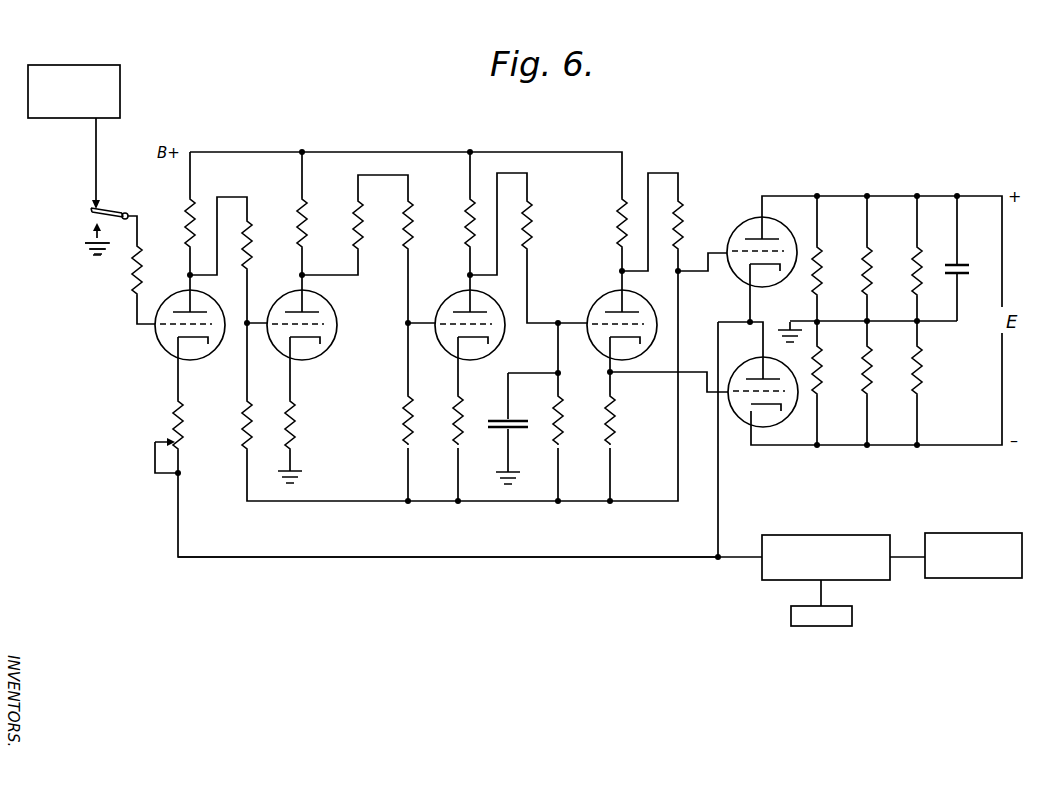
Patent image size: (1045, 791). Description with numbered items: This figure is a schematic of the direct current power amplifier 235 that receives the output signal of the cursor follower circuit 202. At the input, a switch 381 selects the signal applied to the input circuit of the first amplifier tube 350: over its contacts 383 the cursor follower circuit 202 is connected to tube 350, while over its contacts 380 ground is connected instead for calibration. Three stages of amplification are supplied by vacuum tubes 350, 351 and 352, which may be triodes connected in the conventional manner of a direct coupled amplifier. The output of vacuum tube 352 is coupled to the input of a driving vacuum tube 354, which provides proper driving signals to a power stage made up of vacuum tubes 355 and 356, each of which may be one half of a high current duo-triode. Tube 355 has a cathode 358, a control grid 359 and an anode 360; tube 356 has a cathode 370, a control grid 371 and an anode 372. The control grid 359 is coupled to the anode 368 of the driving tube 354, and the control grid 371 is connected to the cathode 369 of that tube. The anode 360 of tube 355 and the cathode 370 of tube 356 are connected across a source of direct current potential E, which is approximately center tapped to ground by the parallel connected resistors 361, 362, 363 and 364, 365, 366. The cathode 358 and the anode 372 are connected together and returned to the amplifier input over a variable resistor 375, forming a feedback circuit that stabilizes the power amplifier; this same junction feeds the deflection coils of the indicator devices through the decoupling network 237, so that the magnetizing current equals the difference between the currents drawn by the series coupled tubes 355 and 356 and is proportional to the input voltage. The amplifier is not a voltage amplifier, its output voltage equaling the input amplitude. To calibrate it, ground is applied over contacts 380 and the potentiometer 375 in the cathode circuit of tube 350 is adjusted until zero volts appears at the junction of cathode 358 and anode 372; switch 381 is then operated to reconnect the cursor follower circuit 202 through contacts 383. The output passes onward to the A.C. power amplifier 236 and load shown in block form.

The cursor follower circuit 202 is at (121, 76).
The direct current power amplifier 235 is at (448, 595).
The A.C. power amplifier 236 is at (968, 533).
The decoupling network 237 is at (832, 528).
The vacuum tube 350 is at (164, 352).
The vacuum tube 351 is at (311, 360).
The vacuum tube 352 is at (473, 360).
The vacuum tube 354 is at (609, 325).
The vacuum tube 355 is at (757, 239).
The vacuum tube 356 is at (772, 405).
The cathode 358 is at (769, 270).
The control grid 359 is at (781, 250).
The anode 360 is at (766, 238).
The resistor 361 is at (820, 260).
The resistor 362 is at (869, 260).
The resistor 363 is at (919, 260).
The resistor 364 is at (820, 364).
The resistor 365 is at (869, 366).
The resistor 366 is at (921, 357).
The anode 368 is at (608, 311).
The cathode 369 is at (638, 345).
The cathode 370 is at (749, 406).
The control grid 371 is at (785, 396).
The anode 372 is at (762, 377).
The variable resistor 375 is at (166, 438).
The contacts 380 is at (91, 223).
The switch 381 is at (121, 212).
The contacts 383 is at (92, 209).